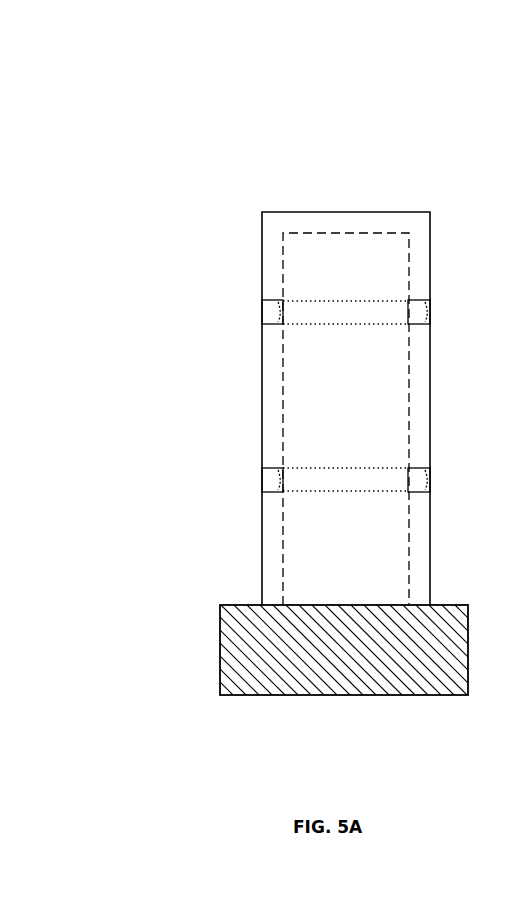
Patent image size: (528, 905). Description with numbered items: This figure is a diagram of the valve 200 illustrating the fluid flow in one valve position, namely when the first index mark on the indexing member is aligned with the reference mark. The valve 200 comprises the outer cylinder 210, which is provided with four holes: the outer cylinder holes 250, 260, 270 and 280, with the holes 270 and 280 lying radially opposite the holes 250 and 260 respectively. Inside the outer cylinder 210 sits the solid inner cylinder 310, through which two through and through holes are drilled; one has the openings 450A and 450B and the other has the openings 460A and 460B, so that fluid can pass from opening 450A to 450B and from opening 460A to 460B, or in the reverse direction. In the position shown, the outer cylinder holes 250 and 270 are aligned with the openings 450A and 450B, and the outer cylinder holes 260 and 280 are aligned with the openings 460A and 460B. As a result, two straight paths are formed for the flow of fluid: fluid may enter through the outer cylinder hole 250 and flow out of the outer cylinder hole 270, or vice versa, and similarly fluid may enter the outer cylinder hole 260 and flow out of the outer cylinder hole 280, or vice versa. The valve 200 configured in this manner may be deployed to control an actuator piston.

The valve 200 is at (250, 80).
The outer cylinder 210 is at (430, 213).
The solid inner cylinder 310 is at (409, 433).
The outer cylinder hole 250 is at (430, 312).
The outer cylinder hole 260 is at (430, 480).
The outer cylinder hole 270 is at (262, 312).
The outer cylinder hole 280 is at (262, 480).
The opening of through and through hole 450A is at (407, 322).
The opening of through and through hole 450B is at (284, 322).
The opening of through and through hole 460A is at (407, 490).
The opening of through and through hole 460B is at (284, 490).